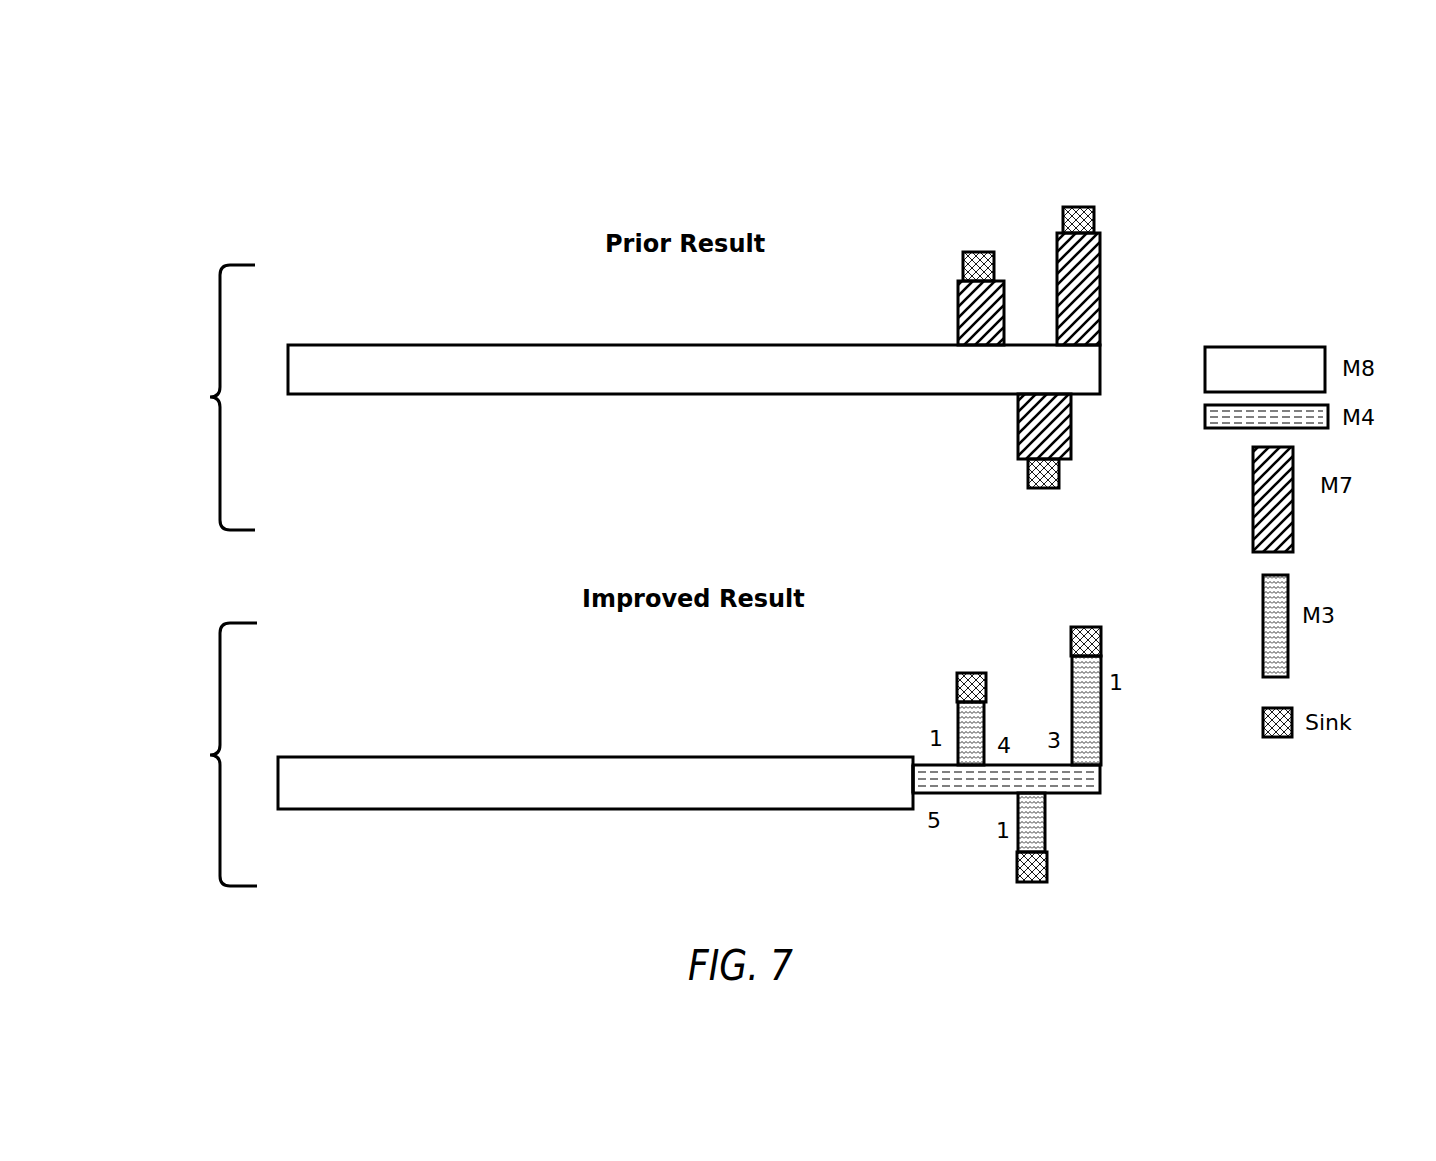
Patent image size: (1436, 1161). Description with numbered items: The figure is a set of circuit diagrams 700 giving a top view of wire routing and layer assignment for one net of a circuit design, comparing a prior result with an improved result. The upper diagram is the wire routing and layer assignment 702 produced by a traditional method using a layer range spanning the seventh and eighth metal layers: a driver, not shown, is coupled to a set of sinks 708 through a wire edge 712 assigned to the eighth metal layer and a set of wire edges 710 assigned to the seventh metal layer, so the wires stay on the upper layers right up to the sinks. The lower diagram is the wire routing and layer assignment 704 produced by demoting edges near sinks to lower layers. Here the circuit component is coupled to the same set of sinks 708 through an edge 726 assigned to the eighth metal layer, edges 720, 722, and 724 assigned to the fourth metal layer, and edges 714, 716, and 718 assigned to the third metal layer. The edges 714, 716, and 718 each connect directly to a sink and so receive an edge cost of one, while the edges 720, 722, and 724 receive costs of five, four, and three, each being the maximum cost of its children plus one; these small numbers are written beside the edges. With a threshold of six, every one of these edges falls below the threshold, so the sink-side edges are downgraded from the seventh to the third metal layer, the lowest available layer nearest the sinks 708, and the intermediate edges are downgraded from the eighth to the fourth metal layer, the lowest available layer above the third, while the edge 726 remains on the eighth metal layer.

The set of circuit diagrams 700 is at (160, 205).
The wire routing and layer assignment 702 is at (210, 397).
The wire routing and layer assignment 704 is at (211, 754).
The sinks 708 is at (1088, 207).
The wire edges 710 is at (958, 296).
The wire edge 712 is at (778, 345).
The edge 714 is at (958, 720).
The edge 716 is at (1018, 844).
The edge 718 is at (1102, 668).
The edge 720 is at (925, 764).
The edge 722 is at (1005, 776).
The edge 724 is at (1055, 778).
The edge 726 is at (775, 757).